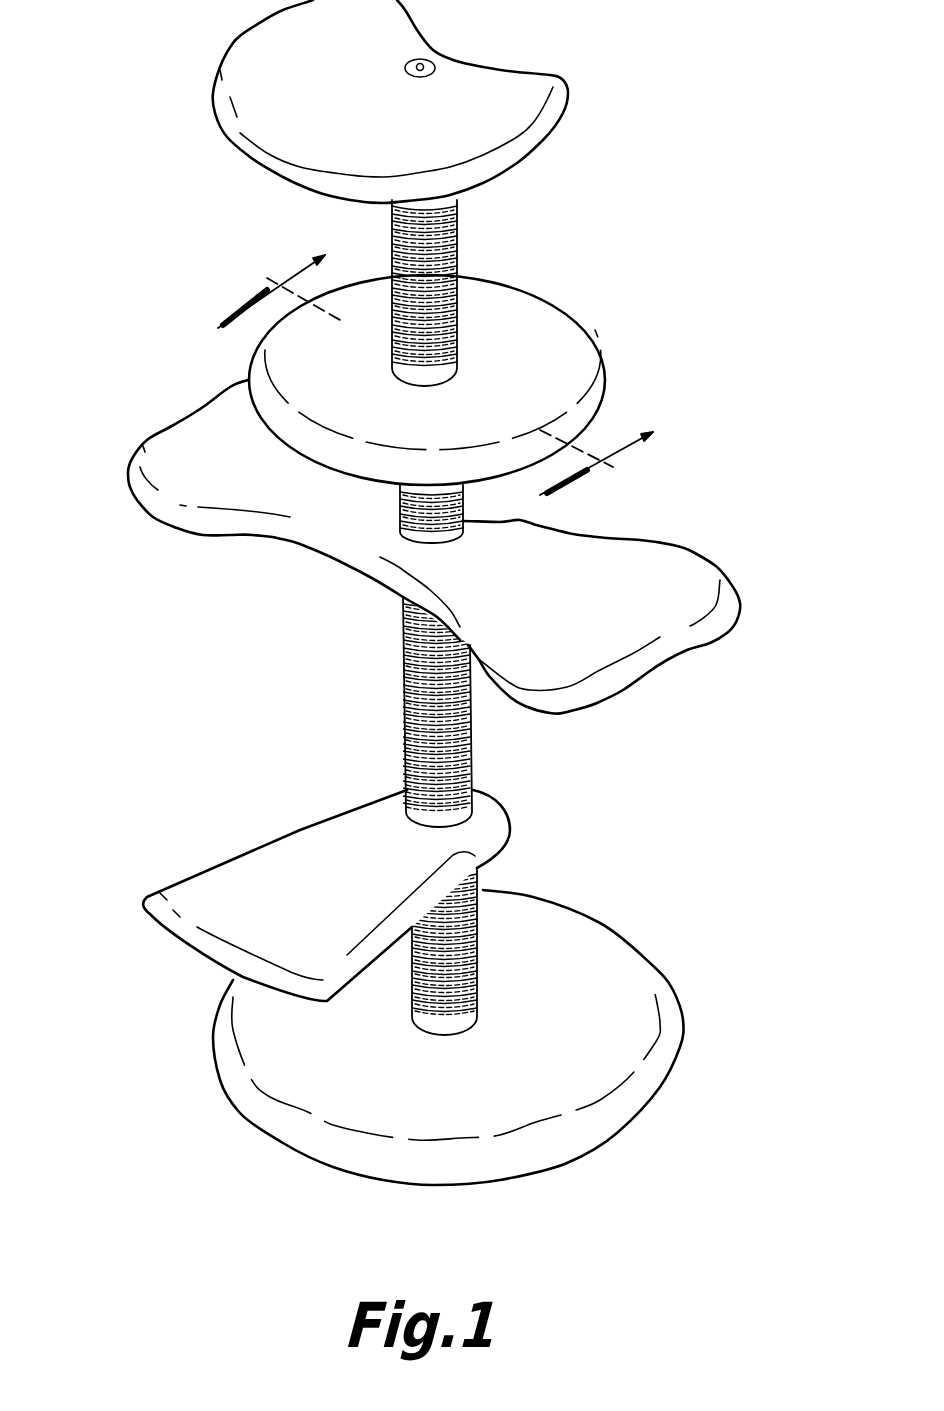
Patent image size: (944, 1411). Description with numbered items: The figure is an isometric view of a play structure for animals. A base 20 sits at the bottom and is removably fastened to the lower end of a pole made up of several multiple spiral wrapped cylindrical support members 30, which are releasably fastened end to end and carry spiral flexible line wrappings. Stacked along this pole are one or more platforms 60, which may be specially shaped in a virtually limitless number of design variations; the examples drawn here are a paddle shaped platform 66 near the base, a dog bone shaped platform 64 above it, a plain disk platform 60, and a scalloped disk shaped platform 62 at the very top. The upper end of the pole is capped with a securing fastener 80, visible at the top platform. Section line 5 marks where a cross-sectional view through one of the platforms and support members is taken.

The base 20 is at (623, 963).
The multiple spiral wrapped cylindrical support members 30 is at (460, 220).
The platform 60 is at (543, 313).
The scalloped disk shaped platform 62 is at (566, 80).
The dog bone shaped platform 64 is at (687, 560).
The paddle shaped platform 66 is at (213, 878).
The securing fastener 80 is at (433, 63).
The section line 5- 5 is at (448, 362).